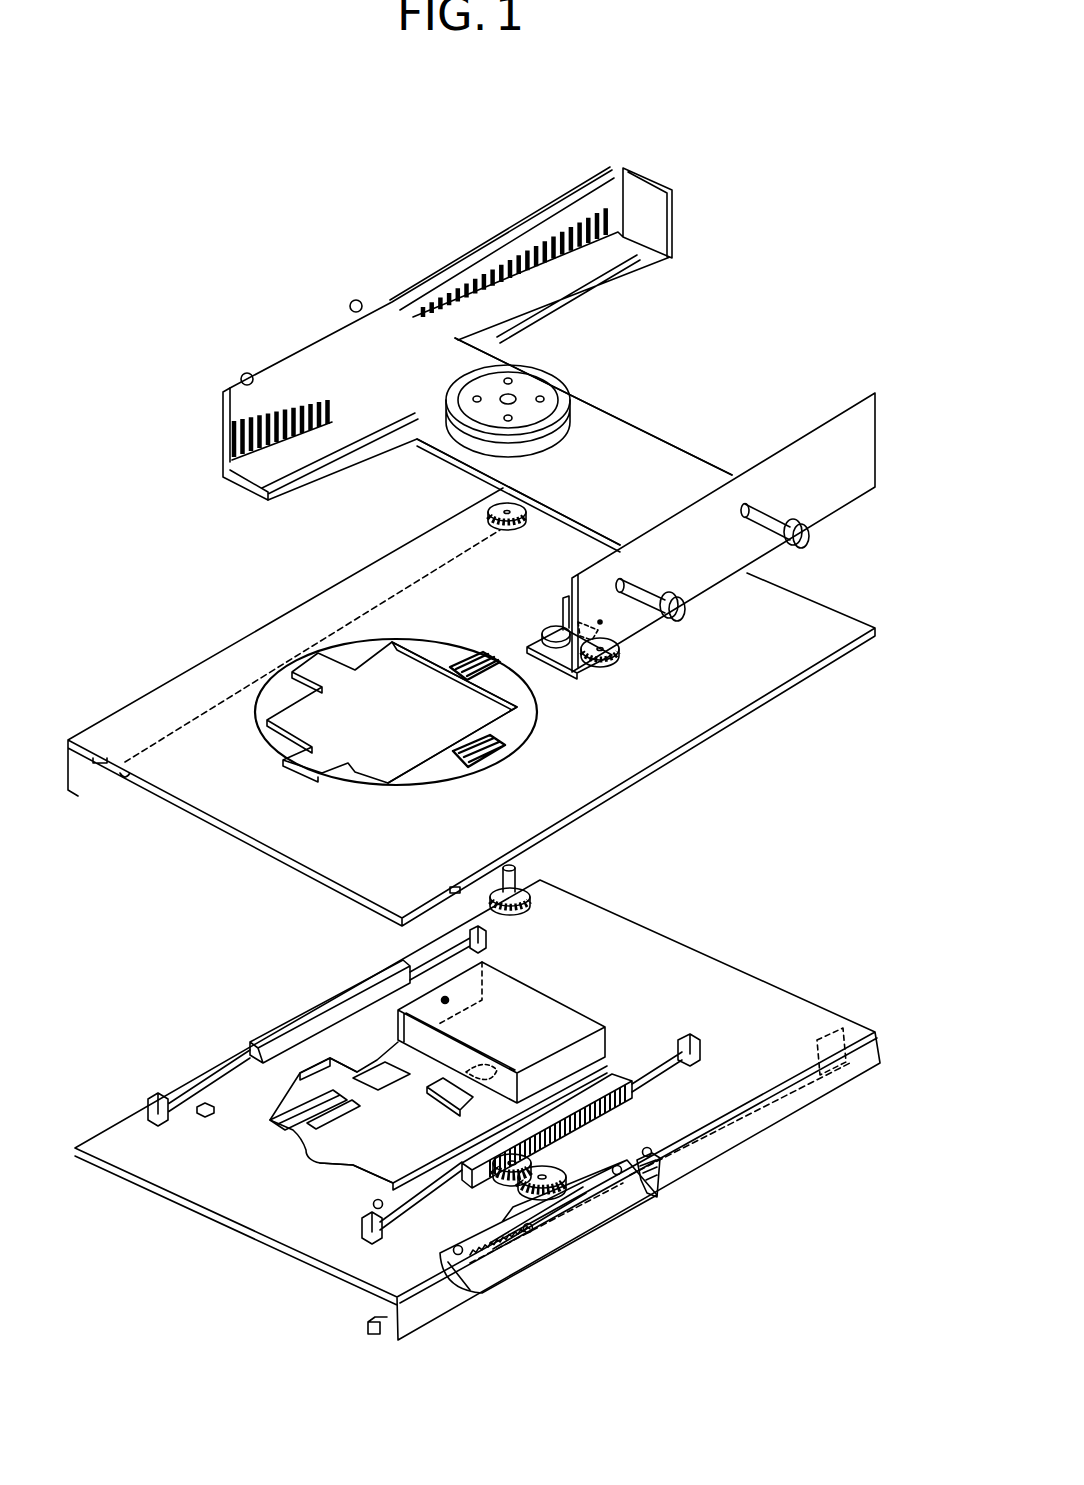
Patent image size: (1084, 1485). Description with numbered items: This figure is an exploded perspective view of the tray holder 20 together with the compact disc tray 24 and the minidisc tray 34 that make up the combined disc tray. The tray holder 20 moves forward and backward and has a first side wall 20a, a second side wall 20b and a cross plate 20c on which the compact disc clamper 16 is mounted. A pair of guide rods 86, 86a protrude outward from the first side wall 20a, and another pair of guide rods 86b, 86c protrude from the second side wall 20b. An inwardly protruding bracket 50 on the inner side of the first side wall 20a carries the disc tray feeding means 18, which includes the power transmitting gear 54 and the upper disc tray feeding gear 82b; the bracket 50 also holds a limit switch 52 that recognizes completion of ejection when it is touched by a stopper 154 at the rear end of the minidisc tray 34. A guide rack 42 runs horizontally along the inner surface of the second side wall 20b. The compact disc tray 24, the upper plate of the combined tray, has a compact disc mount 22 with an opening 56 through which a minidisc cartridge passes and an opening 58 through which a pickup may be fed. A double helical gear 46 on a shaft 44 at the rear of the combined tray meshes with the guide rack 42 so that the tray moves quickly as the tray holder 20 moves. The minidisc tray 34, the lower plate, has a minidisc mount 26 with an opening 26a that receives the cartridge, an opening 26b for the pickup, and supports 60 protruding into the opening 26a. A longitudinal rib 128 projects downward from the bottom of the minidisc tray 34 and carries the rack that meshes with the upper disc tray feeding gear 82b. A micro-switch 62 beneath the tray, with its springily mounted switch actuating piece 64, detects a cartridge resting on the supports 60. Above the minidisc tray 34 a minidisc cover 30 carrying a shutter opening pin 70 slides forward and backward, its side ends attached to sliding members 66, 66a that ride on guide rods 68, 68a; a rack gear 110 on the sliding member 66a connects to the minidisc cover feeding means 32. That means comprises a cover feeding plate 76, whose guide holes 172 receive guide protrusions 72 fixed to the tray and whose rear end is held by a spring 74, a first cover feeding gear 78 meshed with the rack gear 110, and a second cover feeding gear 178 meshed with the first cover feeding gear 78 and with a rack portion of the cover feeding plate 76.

The compact disc clamper 16 is at (572, 388).
The disc tray feeding means 18 is at (599, 648).
The tray holder 20 is at (300, 338).
The first side wall 20a is at (868, 458).
The second side wall 20b is at (580, 205).
The cross plate 20c is at (640, 442).
The compact disc mount 22 is at (332, 676).
The compact disc tray 24 is at (194, 677).
The minidisc mount 26 is at (396, 1116).
The opening 26a is at (290, 1162).
The opening 26b is at (326, 1070).
The minidisc cover 30 is at (580, 1022).
The minidisc cover feeding means 32 is at (546, 1239).
The minidisc tray 34 is at (162, 1177).
The guide rack 42 is at (594, 233).
The shaft 44 is at (516, 878).
The double helical gear 46 is at (485, 513).
The bracket 50 is at (537, 634).
The limit switch 52 is at (637, 637).
The power transmitting gear 54 is at (616, 658).
The opening 56 is at (375, 672).
The opening 58 is at (316, 672).
The supports 60 is at (297, 1128).
The micro-switch 62 is at (488, 1064).
The switch actuating piece 64 is at (450, 1097).
The sliding member 66 is at (272, 1030).
The sliding member 66a is at (612, 1078).
The guide rod 68 is at (197, 1075).
The guide rod 68a is at (405, 1220).
The shutter opening pin 70 is at (445, 1000).
The guide protrusions 72 is at (456, 1248).
The spring 74 is at (658, 1196).
The cover feeding plate 76 is at (500, 1262).
The first cover feeding gear 78 is at (494, 1183).
The upper disc tray feeding gear 82b is at (563, 624).
The guide rod 86 is at (806, 535).
The guide rod 86a is at (683, 580).
The guide rod 86b is at (355, 300).
The guide rod 86c is at (241, 382).
The rack gear 110 is at (606, 1104).
The longitudinal rib 128 is at (368, 1327).
The stopper 154 is at (826, 1040).
The guide holes 172 is at (556, 1218).
The second cover feeding gear 178 is at (553, 1175).